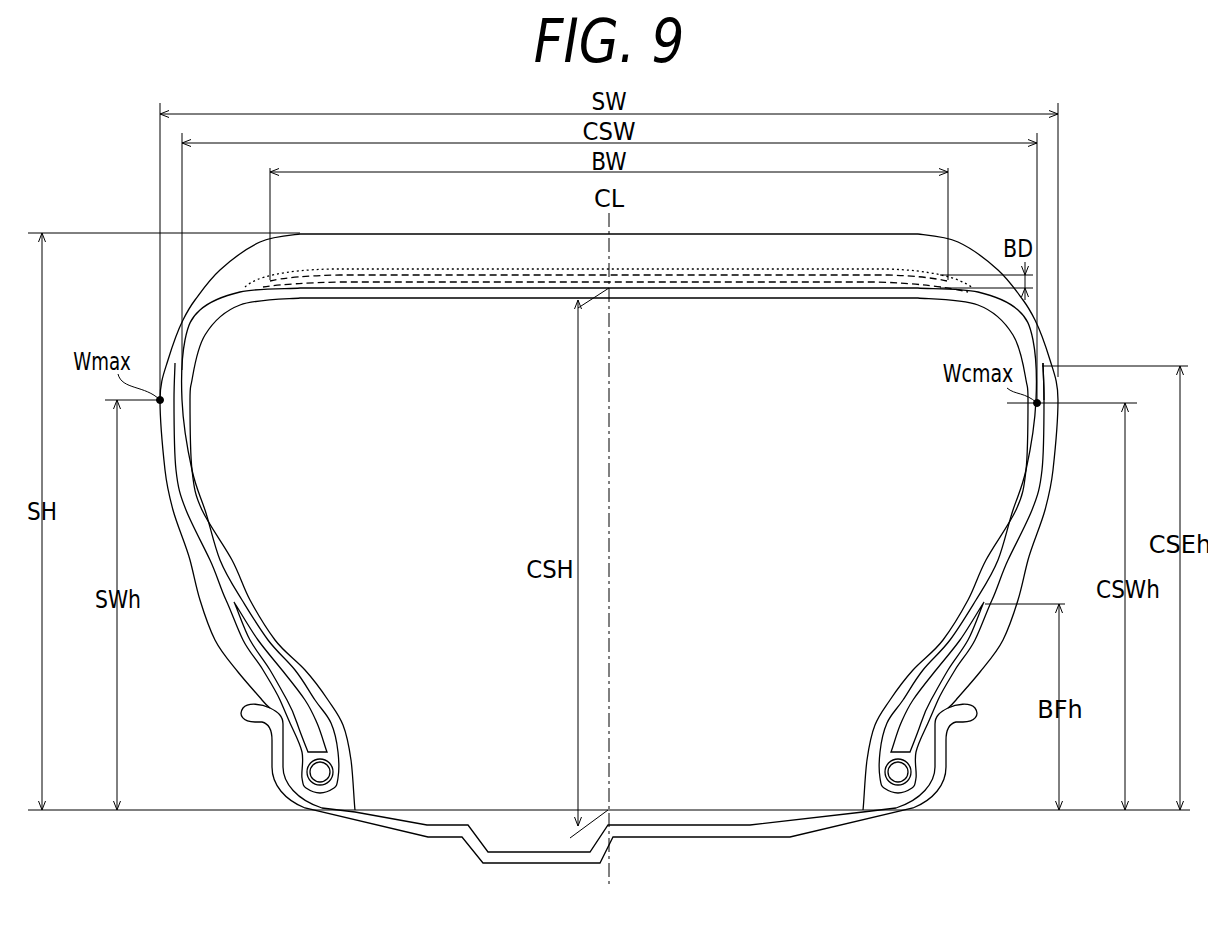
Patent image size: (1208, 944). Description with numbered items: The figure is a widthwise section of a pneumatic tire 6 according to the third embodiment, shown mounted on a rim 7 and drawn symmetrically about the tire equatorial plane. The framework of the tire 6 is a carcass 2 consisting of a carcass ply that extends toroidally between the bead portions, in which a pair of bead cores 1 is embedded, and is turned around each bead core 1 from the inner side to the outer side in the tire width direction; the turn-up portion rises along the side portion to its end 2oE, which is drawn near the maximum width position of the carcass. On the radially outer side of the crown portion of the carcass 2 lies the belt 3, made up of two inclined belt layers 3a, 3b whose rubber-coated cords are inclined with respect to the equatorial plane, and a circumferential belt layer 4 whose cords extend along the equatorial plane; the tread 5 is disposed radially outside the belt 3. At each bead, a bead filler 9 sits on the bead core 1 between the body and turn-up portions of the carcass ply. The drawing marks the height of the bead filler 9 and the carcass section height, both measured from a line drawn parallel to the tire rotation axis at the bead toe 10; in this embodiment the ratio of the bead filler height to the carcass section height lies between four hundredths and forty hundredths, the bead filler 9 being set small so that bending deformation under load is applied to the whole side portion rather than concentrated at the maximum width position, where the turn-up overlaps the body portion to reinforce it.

The bead core 1 is at (320, 772).
The carcass 2 is at (1025, 507).
The end of turn-up portion of carcass ply 2oE is at (1042, 365).
The belt 3 is at (615, 341).
The inclined belt layer 3a is at (903, 285).
The inclined belt layer 3b is at (933, 280).
The circumferential belt layer 4 is at (807, 270).
The tread 5 is at (453, 234).
The tire 6 is at (147, 298).
The rim 7 is at (948, 740).
The bead filler 9 is at (915, 710).
The bead toe 10 is at (355, 810).